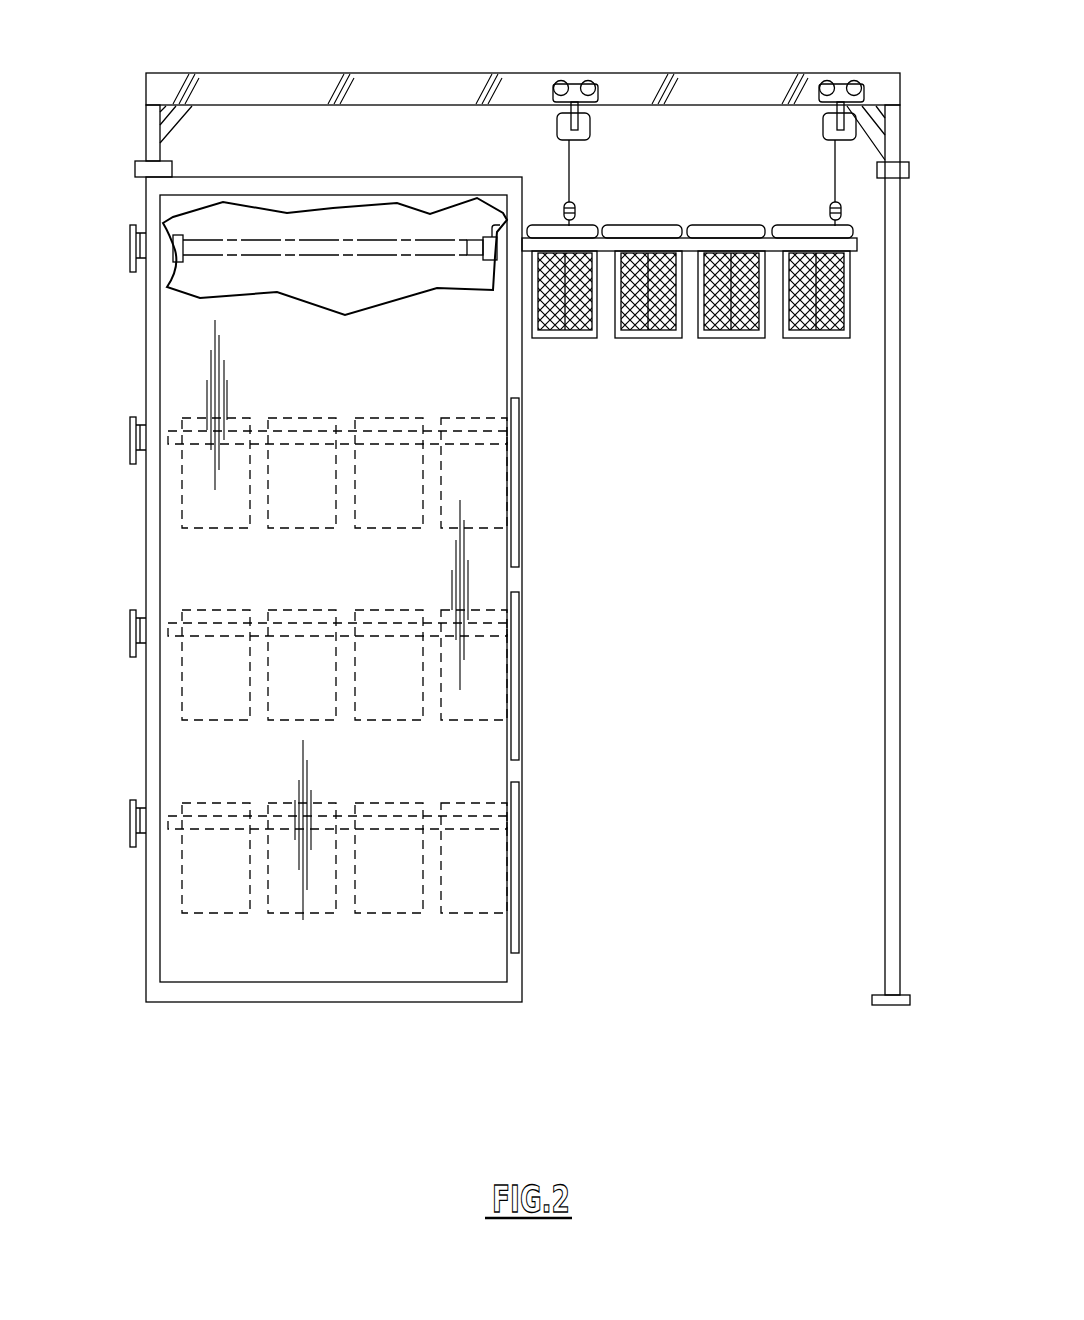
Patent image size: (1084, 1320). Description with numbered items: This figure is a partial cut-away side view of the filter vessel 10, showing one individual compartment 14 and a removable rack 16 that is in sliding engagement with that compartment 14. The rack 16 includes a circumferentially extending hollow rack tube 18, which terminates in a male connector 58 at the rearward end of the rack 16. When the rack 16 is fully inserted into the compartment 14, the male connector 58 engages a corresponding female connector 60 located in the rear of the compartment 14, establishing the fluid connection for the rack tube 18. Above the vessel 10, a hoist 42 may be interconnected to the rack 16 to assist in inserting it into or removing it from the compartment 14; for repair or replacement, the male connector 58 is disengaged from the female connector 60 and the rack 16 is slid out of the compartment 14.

The filter vessel 10 is at (128, 341).
The compartment 14 is at (389, 282).
The rack 16 is at (740, 262).
The rack tube 18 is at (696, 248).
The hoist 42 is at (318, 73).
The male connector 58 is at (475, 240).
The female connector 60 is at (182, 262).